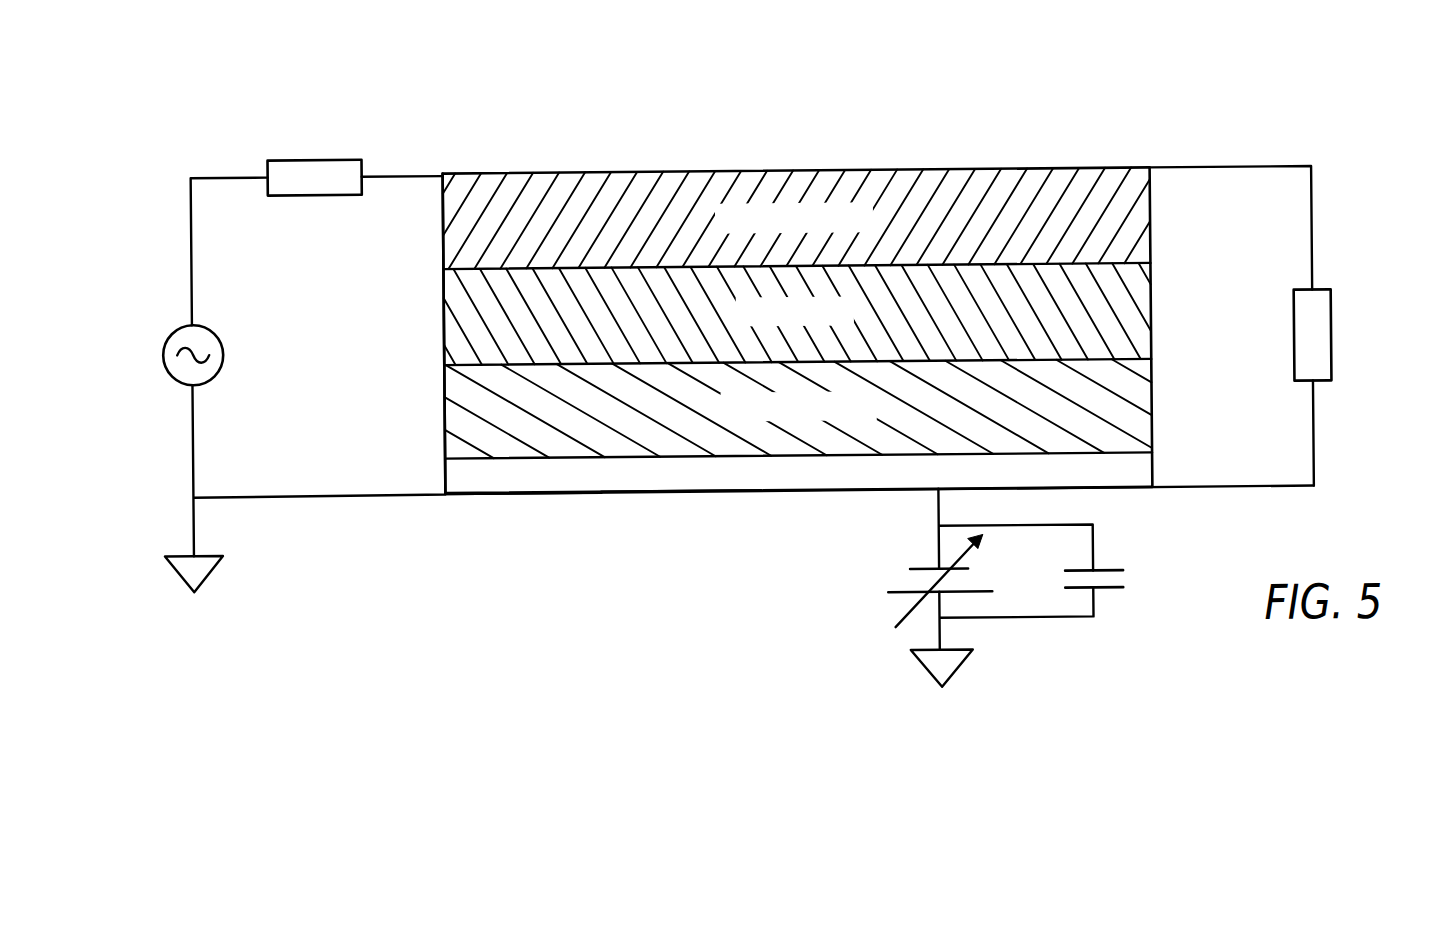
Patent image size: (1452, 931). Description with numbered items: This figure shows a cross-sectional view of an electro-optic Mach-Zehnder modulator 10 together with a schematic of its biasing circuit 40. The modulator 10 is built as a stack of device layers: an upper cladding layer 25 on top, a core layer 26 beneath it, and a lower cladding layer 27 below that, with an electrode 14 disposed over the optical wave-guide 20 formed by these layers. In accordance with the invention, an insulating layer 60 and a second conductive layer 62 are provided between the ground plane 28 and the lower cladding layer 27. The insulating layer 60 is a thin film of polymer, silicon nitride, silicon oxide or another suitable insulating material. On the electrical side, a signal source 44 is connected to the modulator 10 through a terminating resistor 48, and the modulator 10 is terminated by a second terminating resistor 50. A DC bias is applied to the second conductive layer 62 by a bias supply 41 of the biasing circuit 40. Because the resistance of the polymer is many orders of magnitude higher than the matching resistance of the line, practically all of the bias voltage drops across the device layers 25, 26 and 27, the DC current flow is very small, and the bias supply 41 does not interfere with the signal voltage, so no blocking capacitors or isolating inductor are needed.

The modulator 10 is at (1349, 180).
The electrode 14 is at (765, 307).
The optical wave-guide 20 is at (444, 420).
The upper cladding layer 25 is at (1151, 215).
The core layer 26 is at (1151, 307).
The lower cladding layer 27 is at (1151, 407).
The ground plane 28 is at (524, 493).
The biasing circuit 40 is at (383, 543).
The bias supply 41 is at (886, 579).
The signal source 44 is at (166, 329).
The terminating resistor 48 is at (269, 164).
The second terminating resistor 50 is at (1331, 359).
The insulating layer 60 is at (1151, 474).
The second conductive layer 62 is at (676, 459).